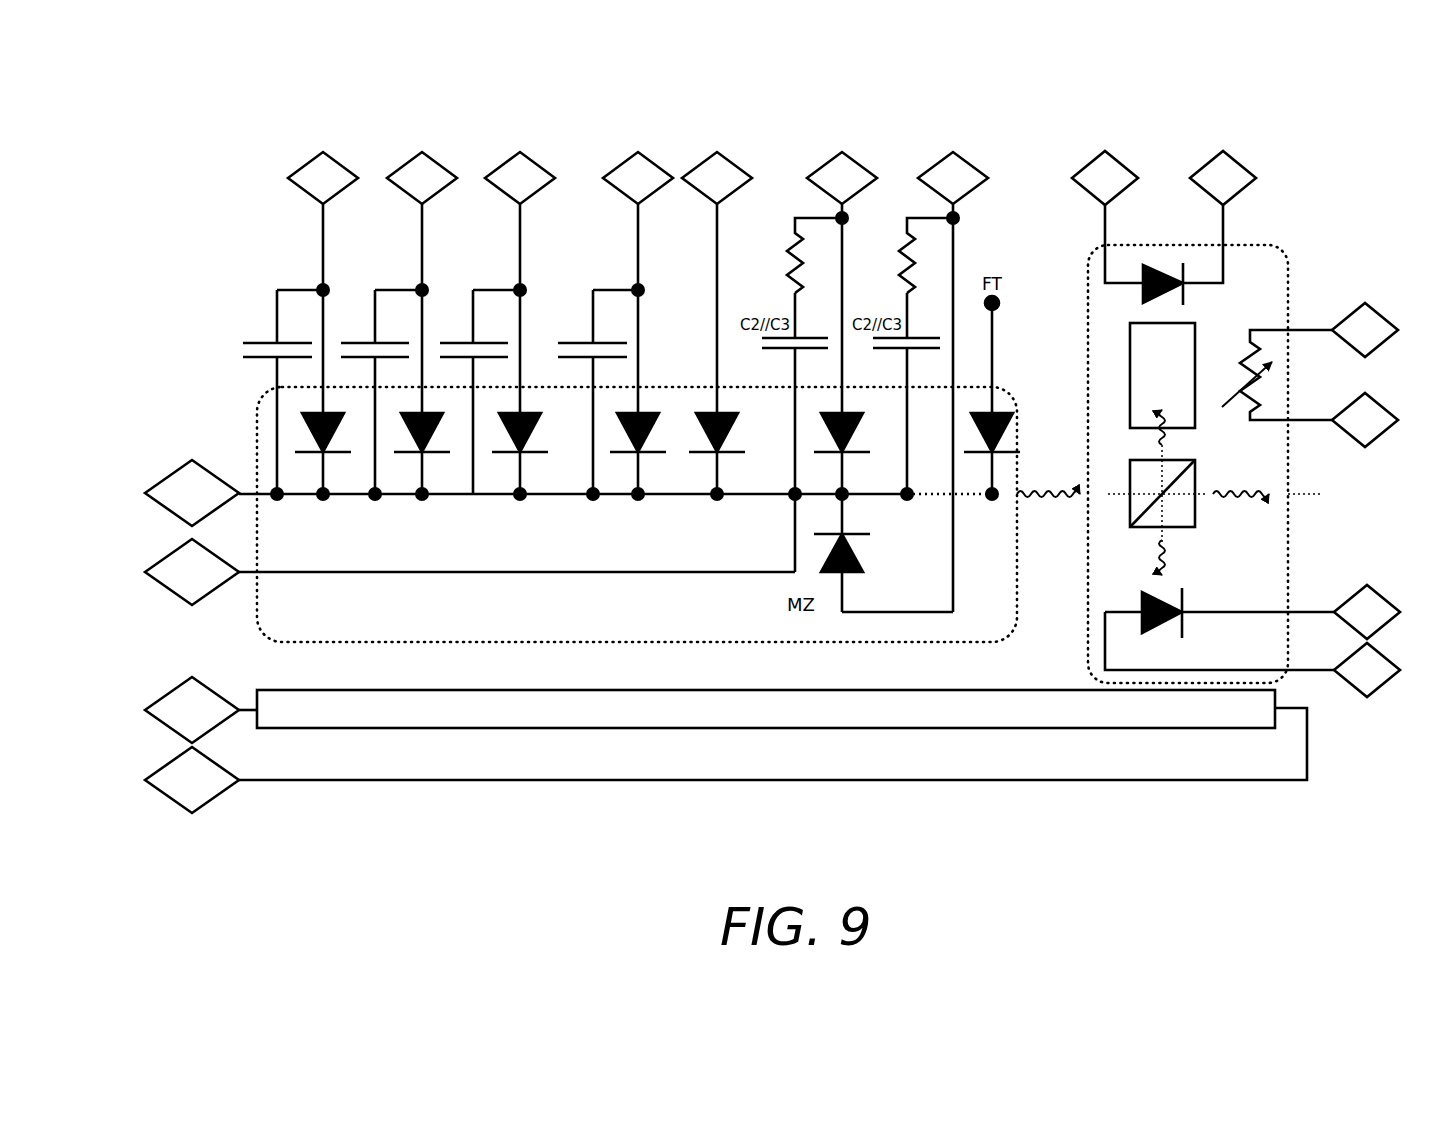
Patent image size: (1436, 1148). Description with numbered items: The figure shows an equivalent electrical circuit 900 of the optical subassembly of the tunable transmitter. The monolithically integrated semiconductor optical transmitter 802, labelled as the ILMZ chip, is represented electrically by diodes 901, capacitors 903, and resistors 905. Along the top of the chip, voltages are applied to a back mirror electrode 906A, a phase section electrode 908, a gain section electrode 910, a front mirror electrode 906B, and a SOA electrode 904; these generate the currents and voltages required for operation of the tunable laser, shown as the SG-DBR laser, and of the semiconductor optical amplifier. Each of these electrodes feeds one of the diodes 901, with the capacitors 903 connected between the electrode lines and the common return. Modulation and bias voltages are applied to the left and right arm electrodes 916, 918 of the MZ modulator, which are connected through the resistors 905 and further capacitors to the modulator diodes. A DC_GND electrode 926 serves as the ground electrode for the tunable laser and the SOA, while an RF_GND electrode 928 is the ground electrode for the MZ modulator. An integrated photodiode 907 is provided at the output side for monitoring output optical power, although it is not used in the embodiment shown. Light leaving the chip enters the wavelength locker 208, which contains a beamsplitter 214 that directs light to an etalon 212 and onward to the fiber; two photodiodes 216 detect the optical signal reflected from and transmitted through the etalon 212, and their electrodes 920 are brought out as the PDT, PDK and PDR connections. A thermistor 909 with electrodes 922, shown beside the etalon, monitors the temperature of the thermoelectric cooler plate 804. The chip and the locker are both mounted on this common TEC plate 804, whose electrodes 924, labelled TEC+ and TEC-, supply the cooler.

The equivalent electrical circuit 900 is at (1170, 106).
The diodes 901 is at (697, 437).
The capacitors 903 is at (497, 343).
The SOA electrode 904 is at (729, 163).
The resistors 905 is at (907, 237).
The back mirror electrode 906A is at (335, 163).
The front mirror electrode 906B is at (650, 163).
The integrated photodiode 907 is at (997, 417).
The phase section electrode 908 is at (434, 163).
The thermistor 909 is at (1262, 384).
The gain section electrode 910 is at (532, 163).
The left arm electrode 916 is at (854, 163).
The right arm electrode 918 is at (965, 163).
The photodiode electrodes 920 is at (1123, 167).
The thermistor electrodes 922 is at (1393, 362).
The TEC electrodes 924 is at (163, 777).
The DC_GND electrode 926 is at (167, 480).
The RF_GND electrode 928 is at (163, 563).
The wavelength locker 208 is at (1288, 252).
The etalon 212 is at (1138, 365).
The beamsplitter 214 is at (1138, 478).
The photodetectors 216 is at (1153, 270).
The semiconductor optical transmitter 802 is at (472, 631).
The thermoelectric cooler plate 804 is at (939, 723).